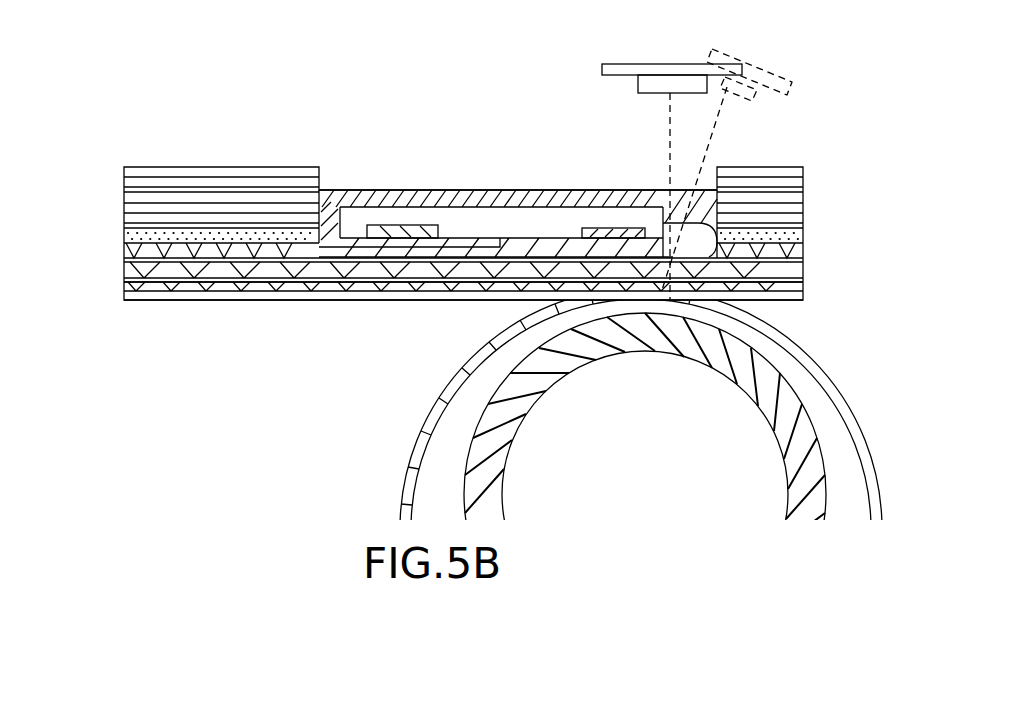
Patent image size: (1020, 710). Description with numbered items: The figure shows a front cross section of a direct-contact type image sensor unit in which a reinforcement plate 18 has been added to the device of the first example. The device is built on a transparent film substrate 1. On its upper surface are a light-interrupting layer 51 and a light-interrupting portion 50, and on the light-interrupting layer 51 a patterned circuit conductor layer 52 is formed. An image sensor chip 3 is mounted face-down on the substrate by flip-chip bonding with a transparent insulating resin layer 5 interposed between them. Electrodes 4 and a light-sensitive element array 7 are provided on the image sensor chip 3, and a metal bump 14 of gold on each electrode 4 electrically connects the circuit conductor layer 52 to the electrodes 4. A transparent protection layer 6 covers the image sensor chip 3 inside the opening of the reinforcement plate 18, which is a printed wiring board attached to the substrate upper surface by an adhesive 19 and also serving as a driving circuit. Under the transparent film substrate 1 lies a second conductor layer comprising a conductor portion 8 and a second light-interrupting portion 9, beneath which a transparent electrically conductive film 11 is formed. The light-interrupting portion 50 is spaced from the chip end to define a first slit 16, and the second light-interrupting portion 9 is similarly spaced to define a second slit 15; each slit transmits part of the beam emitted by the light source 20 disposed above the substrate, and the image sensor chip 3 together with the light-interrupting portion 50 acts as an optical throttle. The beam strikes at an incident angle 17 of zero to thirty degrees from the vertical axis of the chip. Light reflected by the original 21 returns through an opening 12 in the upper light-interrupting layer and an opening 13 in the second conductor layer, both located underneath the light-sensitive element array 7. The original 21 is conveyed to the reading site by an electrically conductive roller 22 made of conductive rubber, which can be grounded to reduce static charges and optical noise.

The transparent film substrate 1 is at (180, 273).
The image sensor chip 3 is at (458, 218).
The electrodes 4 is at (410, 223).
The transparent insulating resin layer 5 is at (523, 247).
The transparent protection layer 6 is at (433, 190).
The light-sensitive element array 7 is at (633, 228).
The conductor portion 8 is at (242, 285).
The second light-interrupting portion 9 is at (803, 290).
The transparent electrically conductive film 11 is at (283, 293).
The opening 12 is at (530, 283).
The opening 13 is at (597, 283).
The metal bump 14 is at (397, 243).
The second slit 15 is at (717, 298).
The first slit 16 is at (686, 205).
The incident angle 17 is at (722, 146).
The reinforcement plate 18 is at (223, 203).
The adhesive 19 is at (292, 238).
The light source 20 is at (640, 67).
The original 21 is at (437, 463).
The electrically conductive roller 22 is at (500, 418).
The light-interrupting portion 50 is at (803, 248).
The light-interrupting layer 51 is at (152, 263).
The circuit conductor layer 52 is at (125, 243).